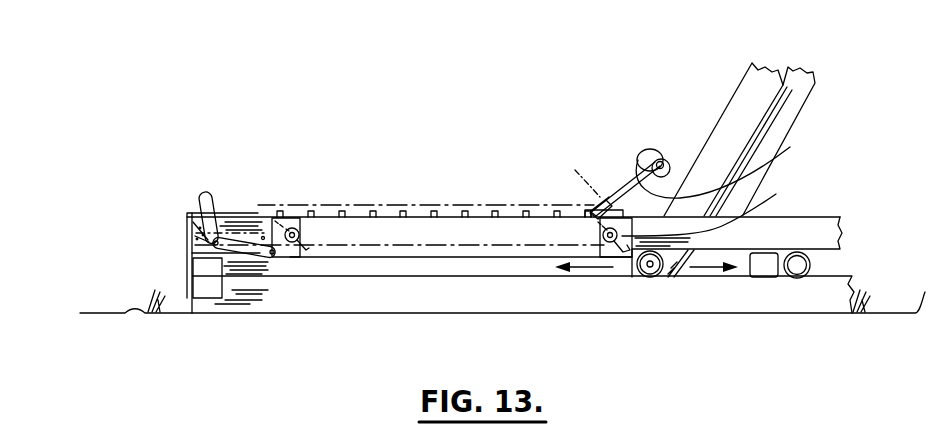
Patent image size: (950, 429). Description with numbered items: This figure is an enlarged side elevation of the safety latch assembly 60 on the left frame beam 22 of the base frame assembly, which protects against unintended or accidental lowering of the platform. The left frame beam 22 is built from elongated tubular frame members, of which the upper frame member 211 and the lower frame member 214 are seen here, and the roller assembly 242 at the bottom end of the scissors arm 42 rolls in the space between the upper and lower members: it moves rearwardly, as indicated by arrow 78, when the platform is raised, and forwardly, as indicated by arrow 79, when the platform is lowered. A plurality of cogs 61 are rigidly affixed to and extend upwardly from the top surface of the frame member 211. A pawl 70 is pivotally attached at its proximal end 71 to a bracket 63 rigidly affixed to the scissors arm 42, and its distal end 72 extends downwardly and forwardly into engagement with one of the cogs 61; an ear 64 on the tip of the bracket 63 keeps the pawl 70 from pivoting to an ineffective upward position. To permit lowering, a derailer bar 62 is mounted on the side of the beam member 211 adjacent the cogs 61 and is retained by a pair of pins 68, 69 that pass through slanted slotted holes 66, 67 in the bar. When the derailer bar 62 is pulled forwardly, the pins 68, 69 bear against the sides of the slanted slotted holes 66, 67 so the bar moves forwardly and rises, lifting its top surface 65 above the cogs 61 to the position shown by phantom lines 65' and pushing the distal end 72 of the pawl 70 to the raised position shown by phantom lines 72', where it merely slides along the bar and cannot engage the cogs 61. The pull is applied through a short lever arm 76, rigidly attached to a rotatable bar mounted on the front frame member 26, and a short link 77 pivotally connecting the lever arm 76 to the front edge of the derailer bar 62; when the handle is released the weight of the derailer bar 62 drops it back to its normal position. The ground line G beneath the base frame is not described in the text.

The left frame beam 22 is at (430, 319).
The front frame member 26 is at (187, 275).
The scissors arm 42 is at (746, 72).
The safety latch assembly 60 is at (591, 171).
The cogs 61 is at (522, 213).
The derailer bar 62 is at (386, 258).
The bracket 63 is at (661, 150).
The ear 64 is at (647, 150).
The top surface 65 is at (434, 184).
The phantom lines 65' is at (426, 178).
The slotted hole 66 is at (303, 258).
The slotted hole 67 is at (621, 258).
The pin 68 is at (301, 235).
The pin 69 is at (713, 206).
The pawl 70 is at (790, 147).
The proximal end 71 is at (704, 144).
The distal end 72 is at (623, 177).
The phantom lines 72' is at (566, 176).
The lever arm 76 is at (198, 210).
The link 77 is at (252, 258).
The arrow 78 is at (695, 270).
The arrow 79 is at (603, 269).
The upper frame member 211 is at (822, 215).
The lower frame member 214 is at (840, 280).
The roller assembly 242 is at (650, 278).
The ground G is at (512, 291).